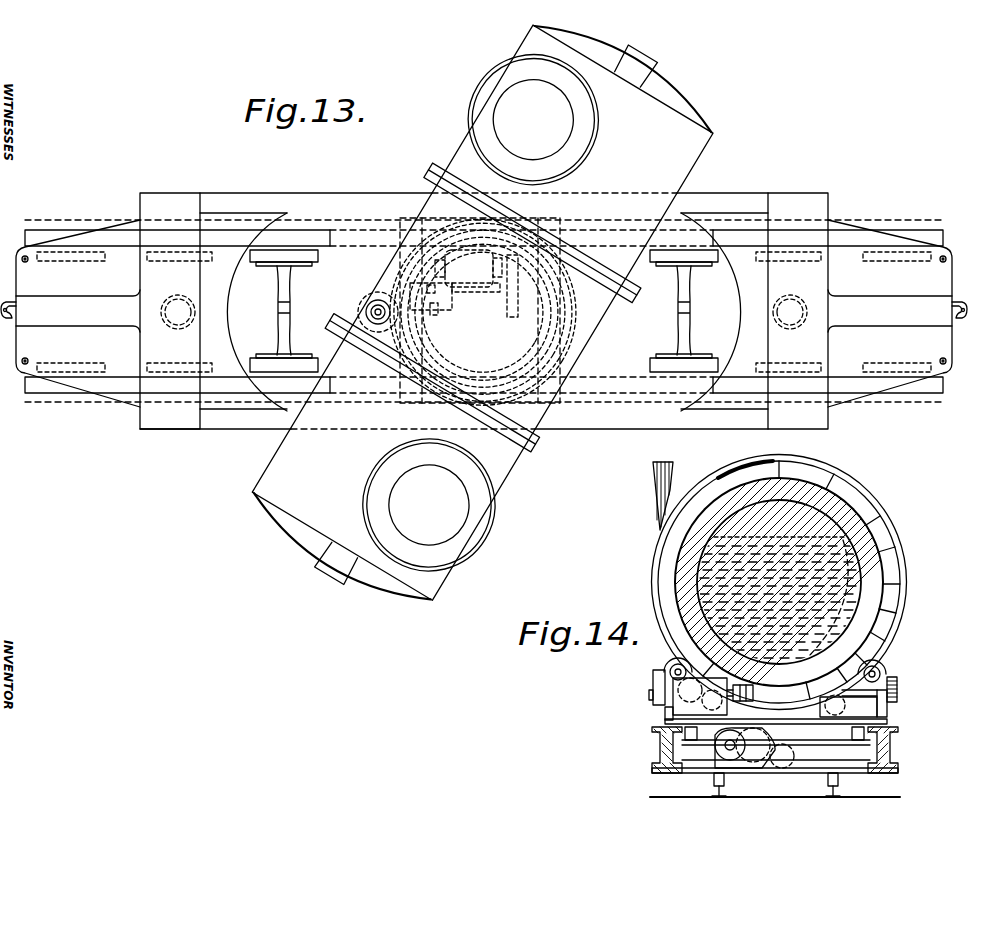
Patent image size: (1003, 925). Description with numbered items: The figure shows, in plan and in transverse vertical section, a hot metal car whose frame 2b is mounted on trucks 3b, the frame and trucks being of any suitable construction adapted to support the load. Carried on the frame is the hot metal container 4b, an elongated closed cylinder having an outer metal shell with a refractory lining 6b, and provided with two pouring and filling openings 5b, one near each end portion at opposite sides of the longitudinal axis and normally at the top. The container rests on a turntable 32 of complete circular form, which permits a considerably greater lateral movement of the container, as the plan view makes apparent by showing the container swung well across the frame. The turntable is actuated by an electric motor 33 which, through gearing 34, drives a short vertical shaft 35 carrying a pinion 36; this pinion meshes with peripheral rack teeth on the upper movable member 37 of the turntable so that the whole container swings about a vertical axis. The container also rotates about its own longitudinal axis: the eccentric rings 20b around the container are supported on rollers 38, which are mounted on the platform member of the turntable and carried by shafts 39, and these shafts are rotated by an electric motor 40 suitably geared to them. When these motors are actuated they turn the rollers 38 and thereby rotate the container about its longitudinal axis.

In FIG. 13, the frame 2b is at (355, 197).
In FIG. 13, the trucks 3b is at (484, 311).
In FIG. 14, the trucks 3b is at (713, 775).
In FIG. 13, the hot metal container 4b is at (458, 151).
In FIG. 14, the hot metal container 4b is at (883, 550).
In FIG. 13, the pouring and filling openings 5b is at (505, 102).
In FIG. 14, the pouring and filling openings 5b is at (668, 487).
In FIG. 14, the refractory lining 6b is at (877, 563).
In FIG. 13, the eccentric rings 20b is at (632, 300).
In FIG. 14, the eccentric rings 20b is at (885, 508).
In FIG. 13, the turntable 32 is at (537, 367).
In FIG. 14, the turntable 32 is at (823, 737).
In FIG. 13, the electric motor 33 is at (481, 287).
In FIG. 14, the electric motor 33 is at (730, 762).
In FIG. 13, the gearing 34 is at (437, 325).
In FIG. 13, the short vertical shaft 35 is at (370, 307).
In FIG. 13, the pinion 36 is at (375, 303).
In FIG. 13, the upper movable member 37 is at (398, 267).
In FIG. 14, the upper movable member 37 is at (807, 728).
In FIG. 14, the rollers 38 is at (677, 667).
In FIG. 14, the shafts 39 is at (652, 682).
In FIG. 14, the electric motor 40 is at (665, 712).